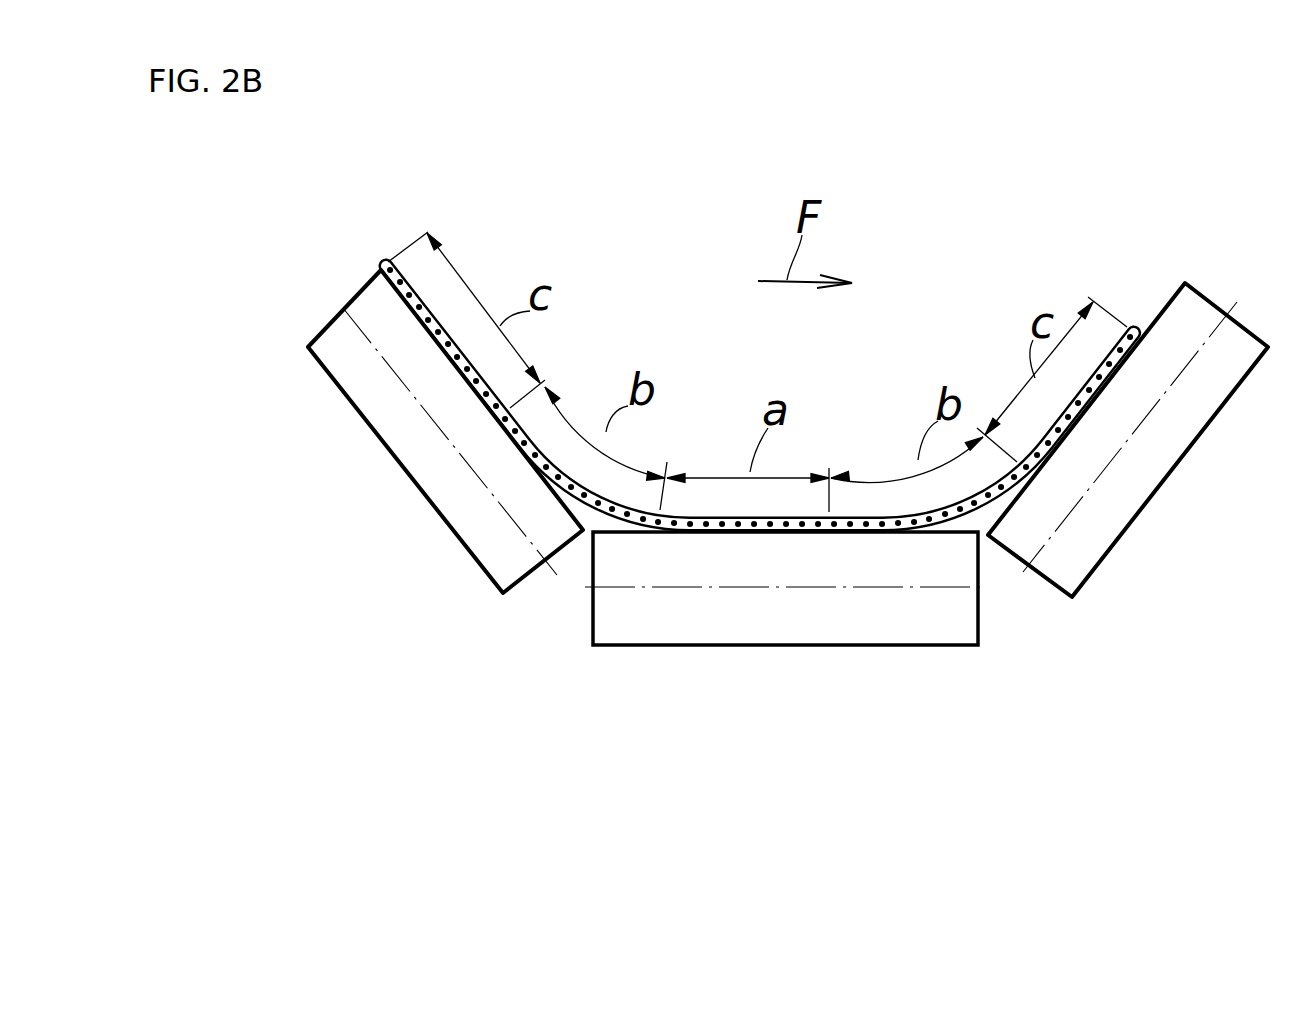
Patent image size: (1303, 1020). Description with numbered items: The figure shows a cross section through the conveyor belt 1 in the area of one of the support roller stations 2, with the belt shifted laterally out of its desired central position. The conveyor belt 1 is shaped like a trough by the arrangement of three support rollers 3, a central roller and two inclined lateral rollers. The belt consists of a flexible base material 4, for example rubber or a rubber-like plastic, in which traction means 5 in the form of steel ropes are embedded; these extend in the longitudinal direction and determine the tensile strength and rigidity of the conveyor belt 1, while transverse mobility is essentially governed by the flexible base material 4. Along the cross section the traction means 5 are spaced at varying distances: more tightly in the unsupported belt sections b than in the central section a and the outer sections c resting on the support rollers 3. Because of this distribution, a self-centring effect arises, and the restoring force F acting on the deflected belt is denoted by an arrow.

The conveyor belt 1 is at (760, 497).
The support roller station 2 is at (747, 488).
The support roller 3 is at (602, 622).
The flexible base material 4 is at (722, 532).
The traction means 5 is at (833, 528).